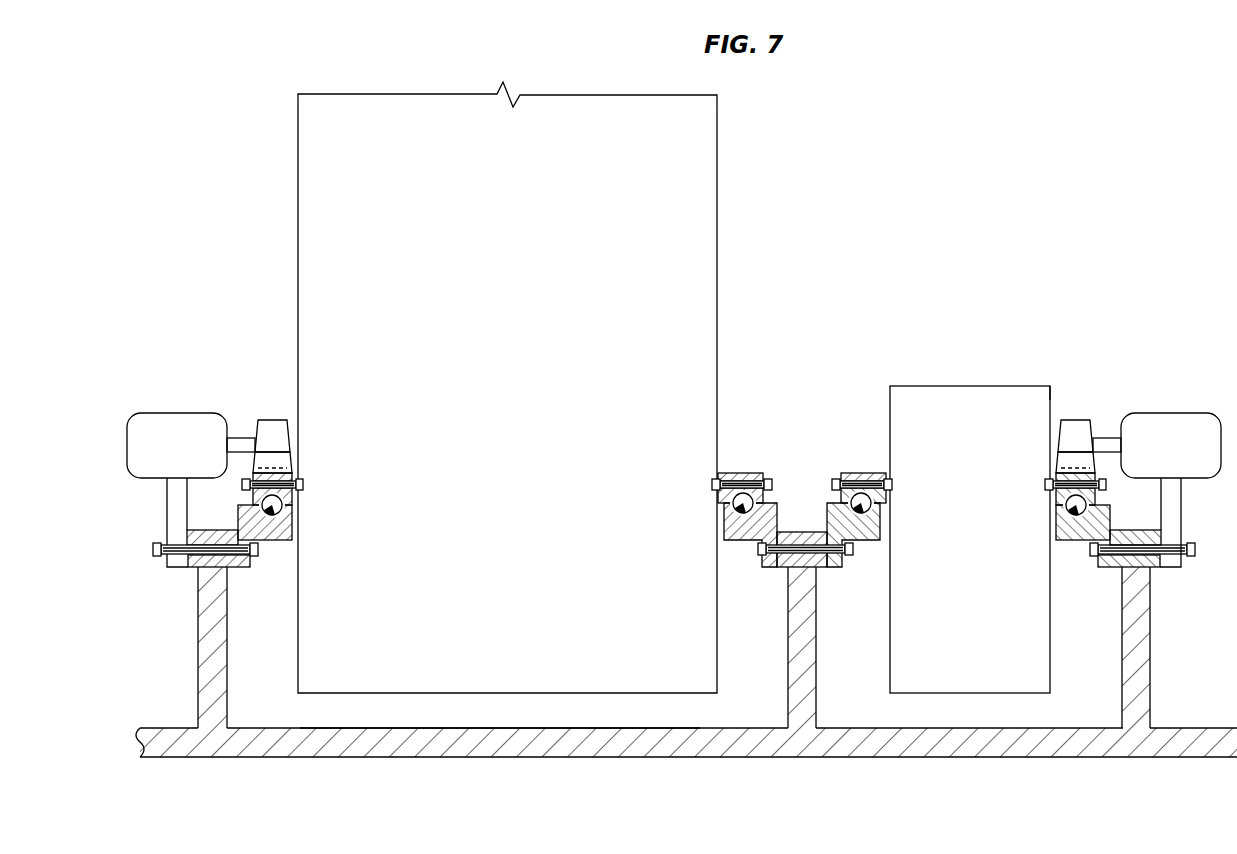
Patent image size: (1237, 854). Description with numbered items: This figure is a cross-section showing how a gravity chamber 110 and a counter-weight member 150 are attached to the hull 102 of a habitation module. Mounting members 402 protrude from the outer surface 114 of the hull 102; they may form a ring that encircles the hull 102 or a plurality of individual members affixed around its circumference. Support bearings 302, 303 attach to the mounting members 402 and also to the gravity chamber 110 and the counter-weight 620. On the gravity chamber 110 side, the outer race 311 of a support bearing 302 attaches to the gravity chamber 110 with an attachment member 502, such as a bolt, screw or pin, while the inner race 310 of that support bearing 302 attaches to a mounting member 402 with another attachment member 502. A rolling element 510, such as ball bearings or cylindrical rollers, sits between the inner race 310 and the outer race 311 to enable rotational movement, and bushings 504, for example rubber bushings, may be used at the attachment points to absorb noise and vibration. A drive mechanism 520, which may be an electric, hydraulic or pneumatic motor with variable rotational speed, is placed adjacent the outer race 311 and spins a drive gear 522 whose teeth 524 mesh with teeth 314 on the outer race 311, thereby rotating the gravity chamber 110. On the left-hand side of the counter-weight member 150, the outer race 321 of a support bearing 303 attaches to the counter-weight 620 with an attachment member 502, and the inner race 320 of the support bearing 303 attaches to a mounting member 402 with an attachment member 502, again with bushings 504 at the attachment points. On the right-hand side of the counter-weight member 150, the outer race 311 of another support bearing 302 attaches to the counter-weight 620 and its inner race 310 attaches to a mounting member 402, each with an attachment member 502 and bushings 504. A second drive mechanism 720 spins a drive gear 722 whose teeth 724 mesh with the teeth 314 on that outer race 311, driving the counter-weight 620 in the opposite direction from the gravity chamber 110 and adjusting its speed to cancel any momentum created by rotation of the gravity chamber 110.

The hull 102 is at (566, 758).
The outer surface 114 is at (575, 725).
The gravity chamber 110 is at (298, 171).
The counter-weight member 150 is at (990, 335).
The counter-weight 620 is at (932, 386).
The mounting member 402 is at (198, 665).
The support bearing 302 is at (674, 529).
The support bearing 303 is at (804, 536).
The inner race 310 is at (282, 530).
The outer race 311 is at (298, 498).
The inner race 320 is at (730, 542).
The outer race 321 is at (718, 500).
The teeth 314 is at (293, 455).
The attachment member 502 is at (303, 485).
The bushing 504 is at (290, 474).
The rolling element 510 is at (258, 503).
The drive mechanism 520 is at (176, 413).
The drive gear 522 is at (654, 412).
The teeth 524 is at (263, 422).
The drive mechanism 720 is at (1165, 413).
The drive gear 722 is at (1084, 404).
The teeth 724 is at (1058, 382).